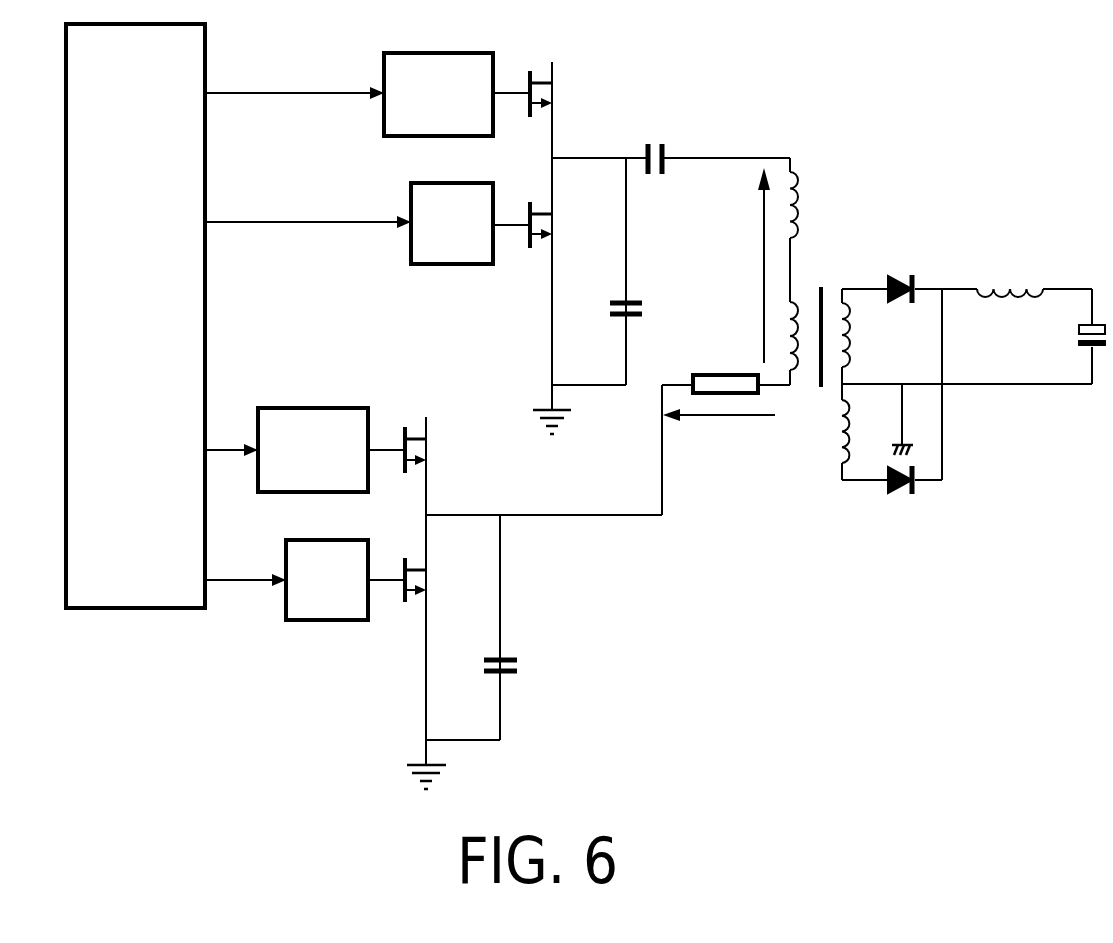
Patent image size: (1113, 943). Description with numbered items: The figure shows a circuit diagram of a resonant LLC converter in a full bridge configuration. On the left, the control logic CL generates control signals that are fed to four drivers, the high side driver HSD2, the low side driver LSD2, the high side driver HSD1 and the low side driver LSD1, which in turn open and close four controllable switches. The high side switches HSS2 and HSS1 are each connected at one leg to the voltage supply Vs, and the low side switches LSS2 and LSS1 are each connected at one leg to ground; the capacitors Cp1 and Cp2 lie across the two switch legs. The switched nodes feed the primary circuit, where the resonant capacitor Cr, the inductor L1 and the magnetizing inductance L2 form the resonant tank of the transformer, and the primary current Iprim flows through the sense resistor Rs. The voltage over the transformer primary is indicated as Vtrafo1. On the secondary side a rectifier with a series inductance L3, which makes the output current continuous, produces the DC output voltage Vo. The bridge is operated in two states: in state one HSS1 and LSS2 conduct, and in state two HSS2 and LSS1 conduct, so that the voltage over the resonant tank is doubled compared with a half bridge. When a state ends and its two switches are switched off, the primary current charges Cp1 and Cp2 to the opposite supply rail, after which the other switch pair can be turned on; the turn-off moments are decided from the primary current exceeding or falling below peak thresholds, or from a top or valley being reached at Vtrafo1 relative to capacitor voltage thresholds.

The control logic CL is at (135, 316).
The high side driver HSD2 is at (438, 94).
The low side driver LSD2 is at (452, 223).
The high side driver HSD1 is at (313, 450).
The low side driver LSD1 is at (327, 580).
The high side switch HSS2 is at (561, 94).
The low side switch LSS2 is at (558, 225).
The high side switch HSS1 is at (436, 450).
The low side switch LSS1 is at (433, 580).
The voltage supply Vs is at (488, 235).
The resonant capacitor Cr is at (655, 141).
The capacitor Cp1 is at (655, 308).
The capacitor Cp2 is at (528, 669).
The sense resistor Rs is at (725, 366).
The primary current Iprim is at (719, 431).
The transformer voltage Vtrafo1 is at (716, 265).
The inductor L1 is at (814, 205).
The magnetizing inductance L2 is at (797, 370).
The series inductance L3 is at (1010, 269).
The DC output voltage Vo is at (1089, 300).